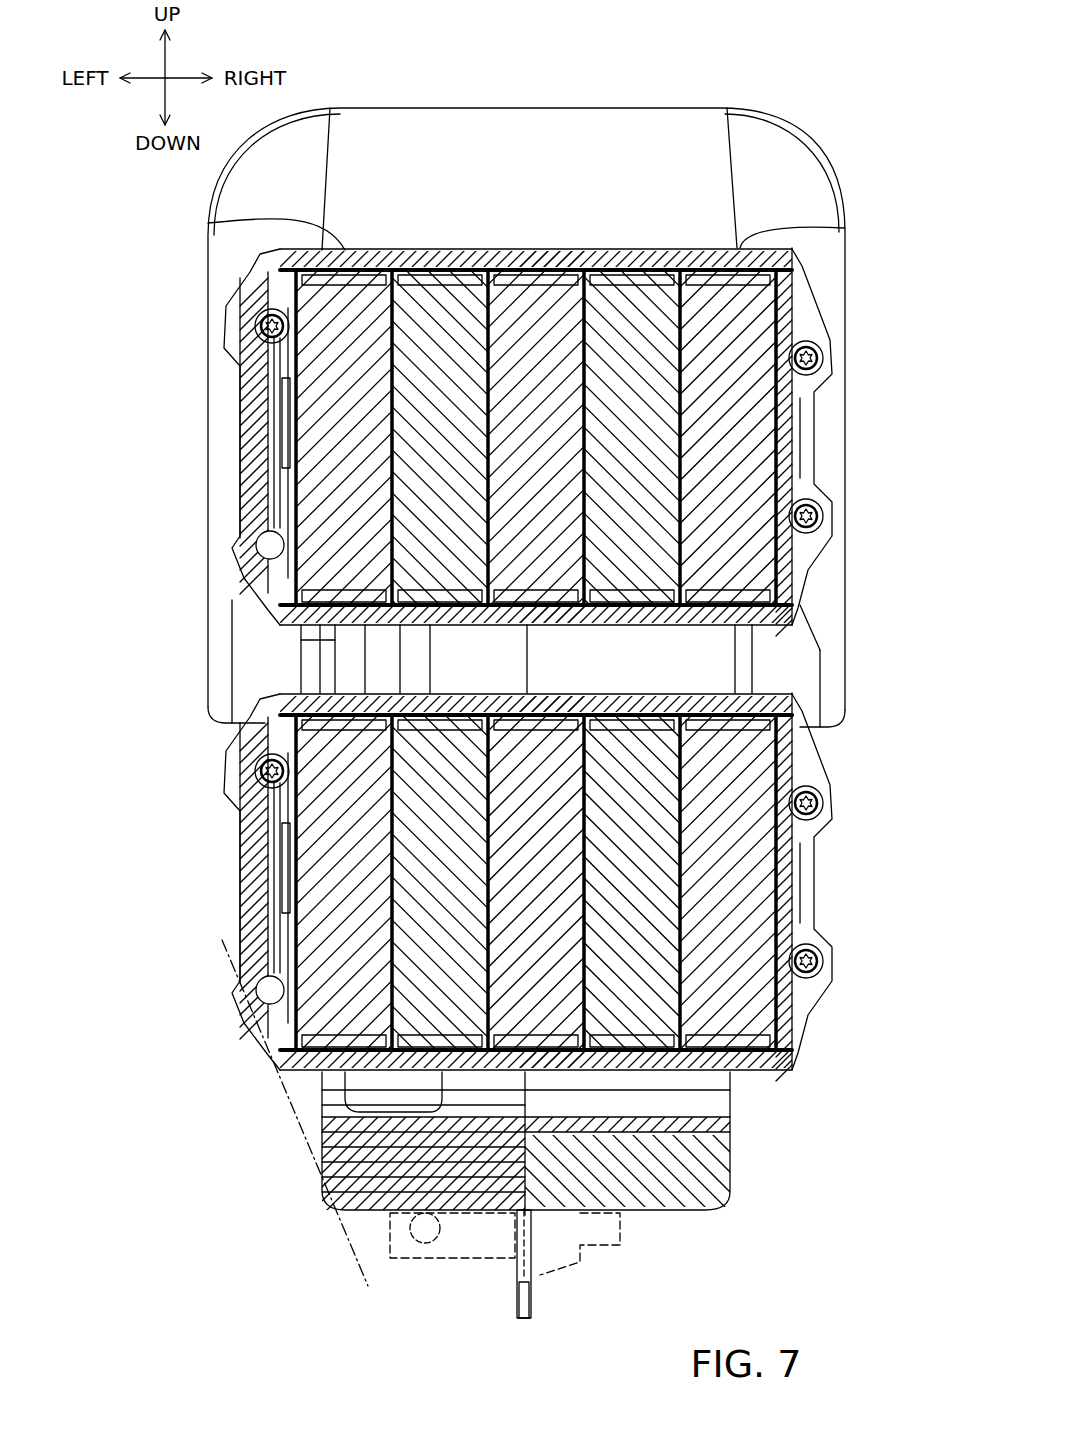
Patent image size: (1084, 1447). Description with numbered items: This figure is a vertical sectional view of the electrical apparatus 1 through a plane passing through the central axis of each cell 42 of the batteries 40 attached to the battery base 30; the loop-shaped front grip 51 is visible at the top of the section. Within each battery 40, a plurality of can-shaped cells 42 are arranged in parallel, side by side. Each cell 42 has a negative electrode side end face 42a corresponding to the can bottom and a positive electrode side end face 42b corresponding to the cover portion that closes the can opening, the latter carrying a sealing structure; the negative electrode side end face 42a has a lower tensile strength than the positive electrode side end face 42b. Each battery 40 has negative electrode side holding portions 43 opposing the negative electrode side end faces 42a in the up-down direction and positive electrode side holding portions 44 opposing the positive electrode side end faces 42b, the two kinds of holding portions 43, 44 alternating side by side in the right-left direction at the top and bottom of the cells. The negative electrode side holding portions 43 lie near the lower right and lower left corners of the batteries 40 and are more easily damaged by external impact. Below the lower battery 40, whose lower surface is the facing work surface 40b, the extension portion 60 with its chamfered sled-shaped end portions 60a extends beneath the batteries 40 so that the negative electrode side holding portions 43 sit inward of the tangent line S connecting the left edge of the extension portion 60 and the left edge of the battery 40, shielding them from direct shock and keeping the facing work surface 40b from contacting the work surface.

The electrical apparatus 1 is at (833, 80).
The battery base 30 is at (300, 660).
The battery 40 is at (240, 415).
The facing work surface 40b is at (700, 1112).
The cell 42 is at (718, 345).
The negative electrode side end face 42a is at (300, 633).
The positive electrode side end face 42b is at (262, 300).
The negative electrode side holding portion 43 is at (262, 572).
The positive electrode side holding portion 44 is at (250, 318).
The front grip 51 is at (320, 248).
The extension portion 60 is at (560, 1215).
The end portion 60a is at (330, 1195).
The tangent line S is at (301, 1128).